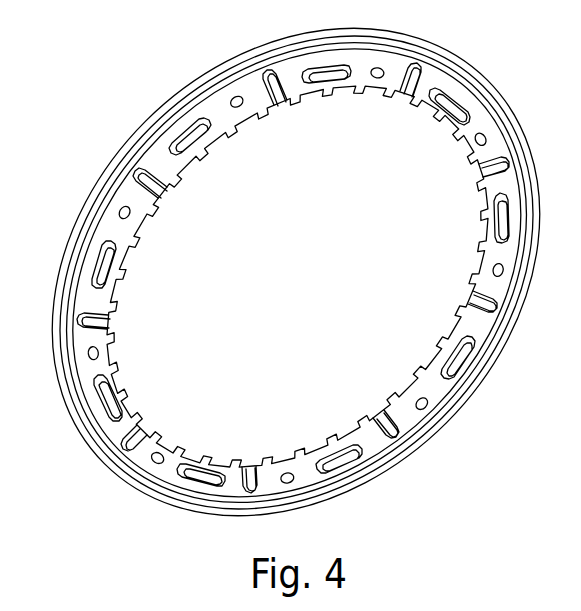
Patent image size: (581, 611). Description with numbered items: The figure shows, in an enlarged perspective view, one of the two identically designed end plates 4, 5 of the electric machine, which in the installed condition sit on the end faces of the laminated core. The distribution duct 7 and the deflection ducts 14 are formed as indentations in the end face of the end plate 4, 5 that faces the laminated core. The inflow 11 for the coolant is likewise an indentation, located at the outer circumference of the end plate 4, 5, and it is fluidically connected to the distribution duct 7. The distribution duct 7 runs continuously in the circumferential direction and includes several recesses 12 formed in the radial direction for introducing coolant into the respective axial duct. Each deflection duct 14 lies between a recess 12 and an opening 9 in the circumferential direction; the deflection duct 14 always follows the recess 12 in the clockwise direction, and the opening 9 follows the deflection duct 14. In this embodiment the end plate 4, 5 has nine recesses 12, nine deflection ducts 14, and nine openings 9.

The end plate 4 is at (124, 112).
The end plate 5 is at (124, 112).
The distribution duct 7 is at (211, 98).
The opening 9 is at (383, 78).
The inflow 11 is at (494, 72).
The recess 12 is at (291, 90).
The deflection duct 14 is at (336, 72).